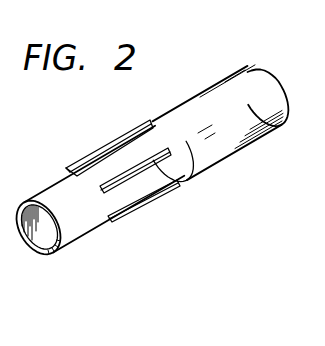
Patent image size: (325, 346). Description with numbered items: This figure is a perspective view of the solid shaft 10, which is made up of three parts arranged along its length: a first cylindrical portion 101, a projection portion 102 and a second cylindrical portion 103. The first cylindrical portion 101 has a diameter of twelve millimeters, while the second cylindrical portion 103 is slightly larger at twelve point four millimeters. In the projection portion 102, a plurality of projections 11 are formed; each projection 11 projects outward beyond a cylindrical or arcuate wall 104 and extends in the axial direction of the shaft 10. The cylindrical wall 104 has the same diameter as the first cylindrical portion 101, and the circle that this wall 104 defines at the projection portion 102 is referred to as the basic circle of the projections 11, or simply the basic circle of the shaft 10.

The shaft 10 is at (206, 79).
The projections 11 is at (101, 150).
The first cylindrical portion 101 is at (75, 247).
The projection portion 102 is at (150, 205).
The second cylindrical portion 103 is at (233, 125).
The cylindrical wall 104 is at (112, 203).